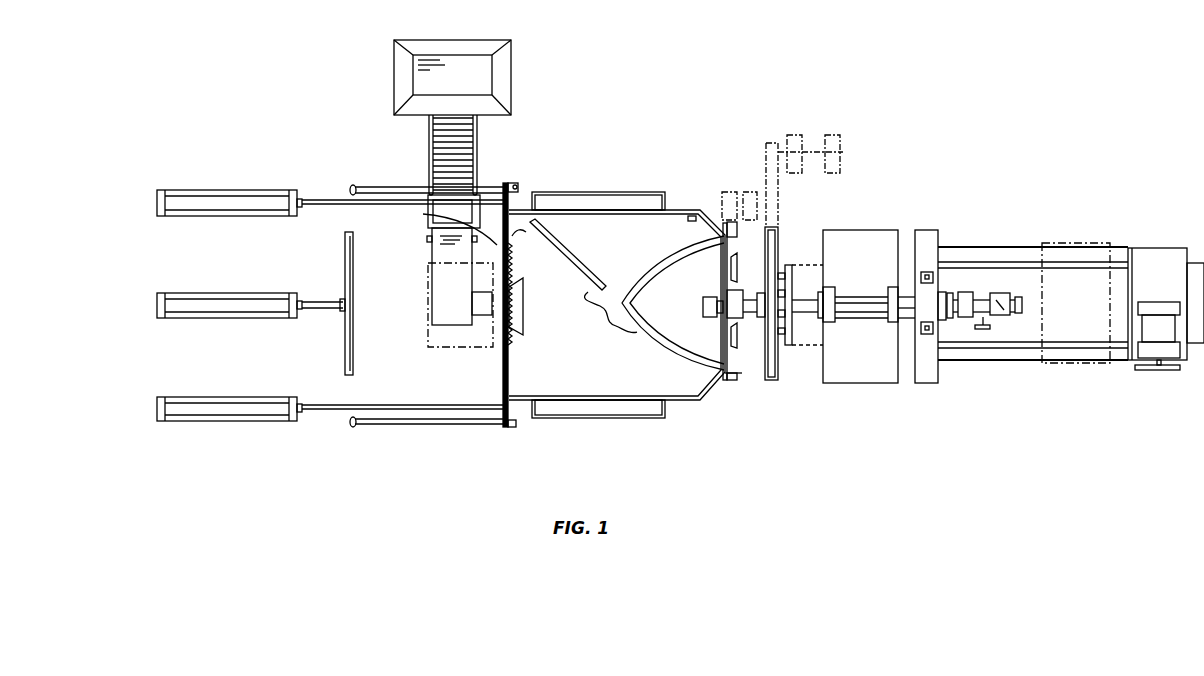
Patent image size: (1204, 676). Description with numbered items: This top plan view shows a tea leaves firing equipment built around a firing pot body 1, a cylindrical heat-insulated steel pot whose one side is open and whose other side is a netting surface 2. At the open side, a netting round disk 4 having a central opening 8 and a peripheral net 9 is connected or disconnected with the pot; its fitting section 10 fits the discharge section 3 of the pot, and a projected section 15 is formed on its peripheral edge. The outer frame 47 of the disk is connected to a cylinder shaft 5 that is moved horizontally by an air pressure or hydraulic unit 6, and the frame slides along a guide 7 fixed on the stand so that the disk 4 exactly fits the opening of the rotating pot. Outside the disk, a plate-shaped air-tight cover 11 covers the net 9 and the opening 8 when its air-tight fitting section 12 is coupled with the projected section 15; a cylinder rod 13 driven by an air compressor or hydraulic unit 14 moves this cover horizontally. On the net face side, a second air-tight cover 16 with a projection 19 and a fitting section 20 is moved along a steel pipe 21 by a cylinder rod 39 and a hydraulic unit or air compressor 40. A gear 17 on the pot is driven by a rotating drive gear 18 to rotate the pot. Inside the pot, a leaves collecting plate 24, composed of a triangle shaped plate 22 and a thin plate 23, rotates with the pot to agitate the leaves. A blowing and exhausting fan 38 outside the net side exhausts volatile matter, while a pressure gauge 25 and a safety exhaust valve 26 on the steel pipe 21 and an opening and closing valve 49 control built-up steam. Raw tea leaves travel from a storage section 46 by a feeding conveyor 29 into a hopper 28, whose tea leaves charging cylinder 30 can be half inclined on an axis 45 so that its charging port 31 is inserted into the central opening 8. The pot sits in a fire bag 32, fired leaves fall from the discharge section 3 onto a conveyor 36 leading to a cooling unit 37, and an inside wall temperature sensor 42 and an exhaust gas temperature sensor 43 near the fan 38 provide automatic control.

The firing pot body 1 is at (636, 192).
The netting surface 2 is at (722, 270).
The discharge section 3 is at (520, 242).
The netting round disk 4 is at (509, 388).
The cylinder shaft 5 is at (375, 196).
The air pressure or hydraulic unit 6 is at (157, 201).
The guide 7 is at (440, 426).
The opening 8 is at (523, 303).
The net 9 is at (512, 266).
The fitting section 10 is at (463, 229).
The air-tight cover 11 is at (345, 360).
The air-tight fitting section 12 is at (345, 234).
The cylinder rod 13 is at (322, 300).
The air compressor or hydraulic unit 14 is at (157, 305).
The projected section 15 is at (428, 214).
The air-tight cover 16 is at (778, 248).
The gear 17 is at (733, 222).
The rotating drive gear 18 is at (733, 200).
The projection 19 is at (740, 374).
The fitting section 20 is at (775, 232).
The steel pipe 21 is at (708, 317).
The triangle shaped plate 22 is at (660, 268).
The thin plate 23 is at (596, 283).
The leaves collecting plate 24 is at (611, 318).
The pressure gauge 25 is at (983, 330).
The safety exhaust valve 26 is at (1000, 292).
The hopper 28 is at (478, 200).
The raw tea leaves feeding conveyor 29 is at (480, 145).
The tea leaves charging cylinder 30 is at (440, 290).
The tea leaves charging port 31 is at (484, 315).
The fire bag 32 is at (627, 418).
The conveyor 36 is at (1032, 335).
The fired tea leaves cooling unit 37 is at (1078, 250).
The blowing and exhausting fan 38 is at (740, 275).
The cylinder rod 39 is at (808, 298).
The hydraulic unit or air compressor 40 is at (866, 320).
The inside wall temperature sensor 42 is at (692, 215).
The exhaust gas temperature sensor 43 is at (734, 381).
The axis 45 is at (427, 240).
The raw tea leaves storage section 46 is at (506, 62).
The outer frame 47 is at (516, 184).
The opening and closing valve 49 is at (1022, 306).